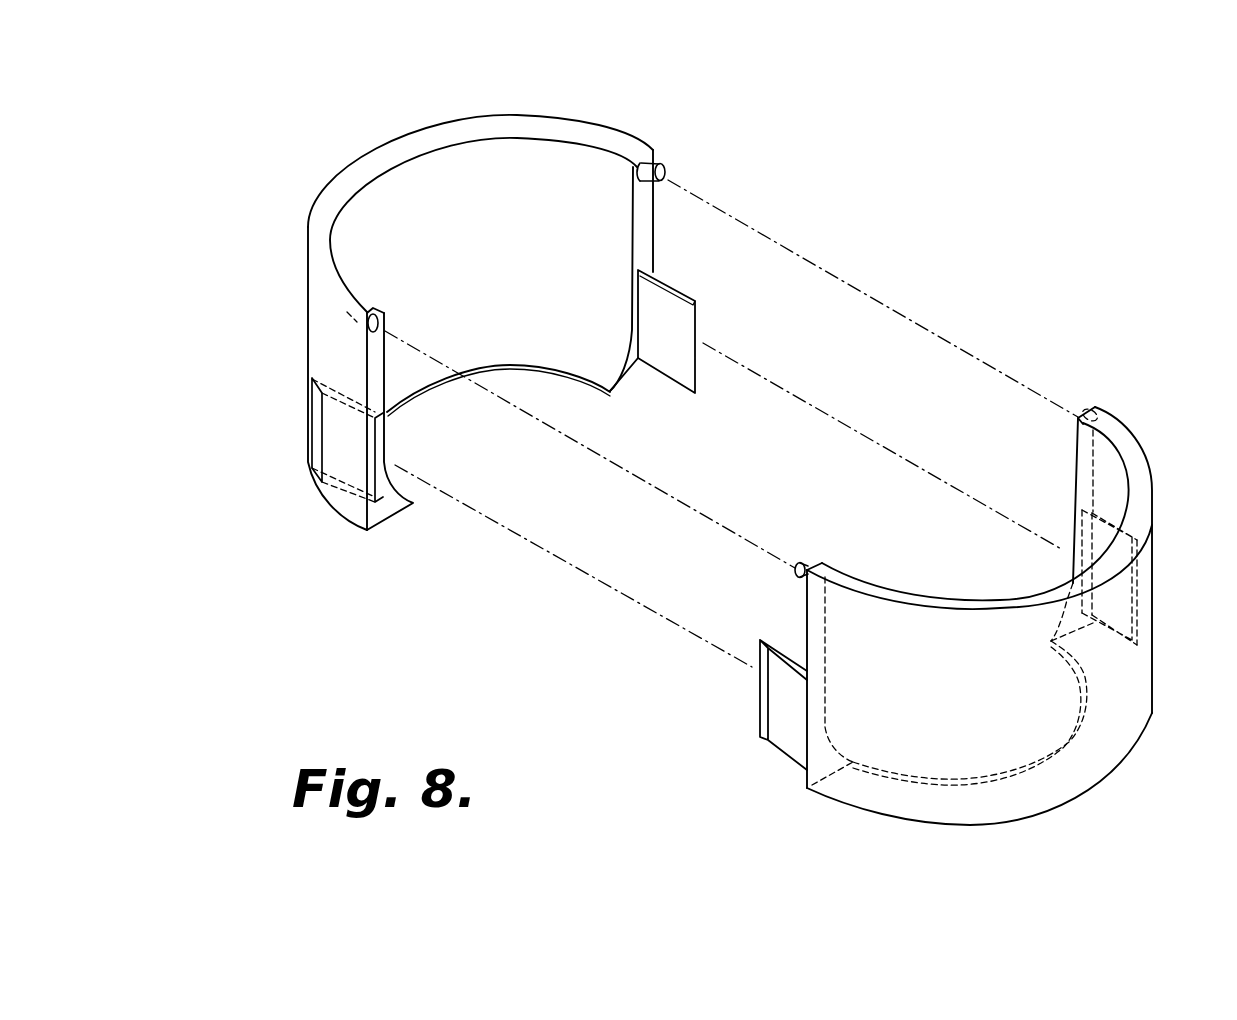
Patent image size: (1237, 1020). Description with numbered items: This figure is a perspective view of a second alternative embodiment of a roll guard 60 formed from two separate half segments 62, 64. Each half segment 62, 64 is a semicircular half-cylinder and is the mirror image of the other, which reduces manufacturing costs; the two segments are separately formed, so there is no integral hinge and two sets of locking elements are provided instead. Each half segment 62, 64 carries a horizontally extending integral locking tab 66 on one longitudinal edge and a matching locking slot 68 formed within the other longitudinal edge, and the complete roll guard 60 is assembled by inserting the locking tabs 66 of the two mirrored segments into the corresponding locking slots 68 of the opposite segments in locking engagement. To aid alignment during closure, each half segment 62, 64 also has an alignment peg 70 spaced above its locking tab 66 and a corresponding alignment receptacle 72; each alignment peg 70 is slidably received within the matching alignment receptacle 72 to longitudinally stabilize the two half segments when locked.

The roll guard 60 is at (922, 207).
The half segment 62 is at (343, 176).
The half segment 64 is at (1152, 635).
The locking tab 66 is at (668, 372).
The locking slot 68 is at (380, 497).
The alignment peg 70 is at (658, 162).
The alignment receptacle 72 is at (366, 343).